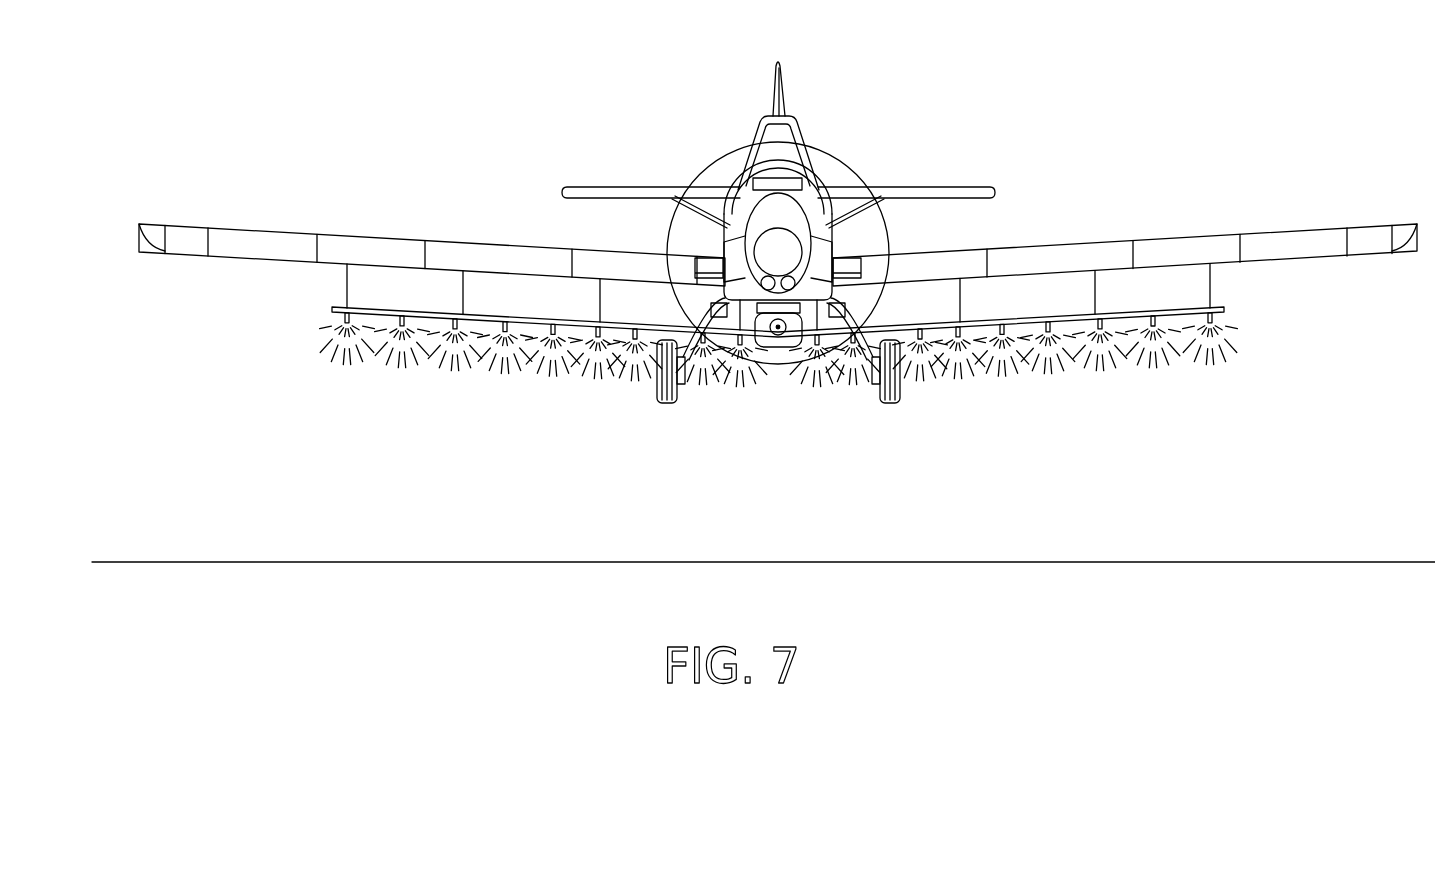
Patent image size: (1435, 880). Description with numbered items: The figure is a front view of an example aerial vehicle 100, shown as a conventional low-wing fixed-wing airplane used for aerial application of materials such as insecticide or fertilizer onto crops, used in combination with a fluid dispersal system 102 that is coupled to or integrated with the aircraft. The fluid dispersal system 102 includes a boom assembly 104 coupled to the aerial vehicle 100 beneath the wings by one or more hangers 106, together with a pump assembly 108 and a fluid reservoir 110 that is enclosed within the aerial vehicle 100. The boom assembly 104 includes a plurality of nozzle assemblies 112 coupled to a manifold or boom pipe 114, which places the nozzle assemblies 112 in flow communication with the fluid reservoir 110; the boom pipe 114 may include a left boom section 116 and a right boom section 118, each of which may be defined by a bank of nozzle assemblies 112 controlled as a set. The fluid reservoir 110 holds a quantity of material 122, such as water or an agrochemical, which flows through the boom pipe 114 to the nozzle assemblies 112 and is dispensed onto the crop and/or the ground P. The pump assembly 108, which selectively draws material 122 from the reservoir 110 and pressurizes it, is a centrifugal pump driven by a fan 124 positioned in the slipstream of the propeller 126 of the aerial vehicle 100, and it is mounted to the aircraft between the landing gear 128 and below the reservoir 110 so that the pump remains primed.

The aerial vehicle 100 is at (778, 255).
The fluid dispersal system 102 is at (794, 327).
The boom assembly 104 is at (1243, 293).
The hangers 106 is at (346, 284).
The pump assembly 108 is at (791, 383).
The fluid reservoir 110 is at (741, 197).
The nozzle assemblies 112 is at (340, 317).
The boom pipe 114 is at (527, 316).
The left boom section 116 is at (1046, 266).
The right boom section 118 is at (411, 278).
The material 122 is at (393, 372).
The fan 124 is at (758, 350).
The propeller 126 is at (836, 157).
The landing gear 128 is at (680, 388).
The ground P is at (1228, 560).